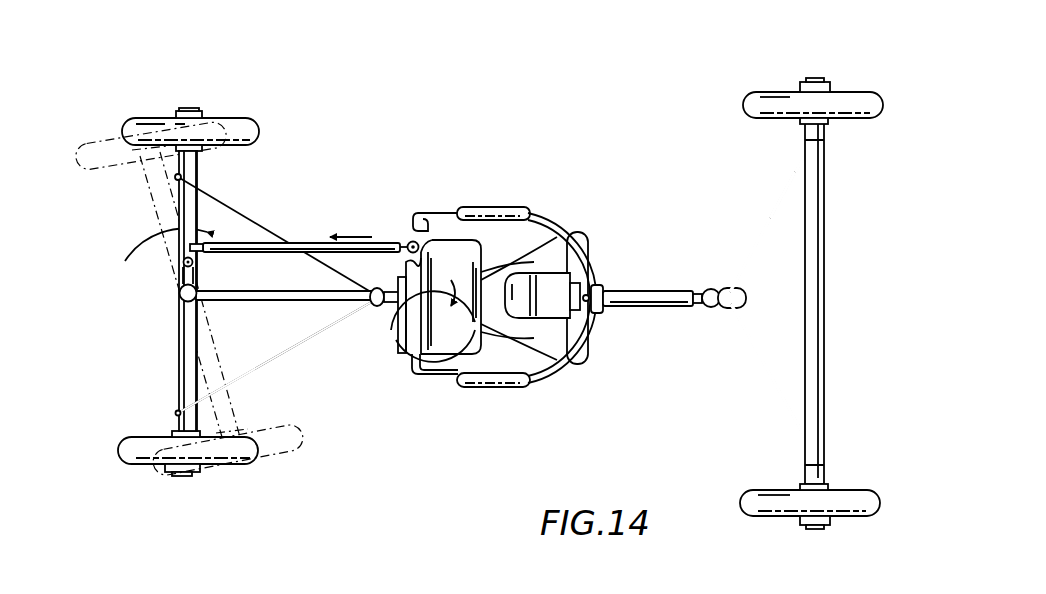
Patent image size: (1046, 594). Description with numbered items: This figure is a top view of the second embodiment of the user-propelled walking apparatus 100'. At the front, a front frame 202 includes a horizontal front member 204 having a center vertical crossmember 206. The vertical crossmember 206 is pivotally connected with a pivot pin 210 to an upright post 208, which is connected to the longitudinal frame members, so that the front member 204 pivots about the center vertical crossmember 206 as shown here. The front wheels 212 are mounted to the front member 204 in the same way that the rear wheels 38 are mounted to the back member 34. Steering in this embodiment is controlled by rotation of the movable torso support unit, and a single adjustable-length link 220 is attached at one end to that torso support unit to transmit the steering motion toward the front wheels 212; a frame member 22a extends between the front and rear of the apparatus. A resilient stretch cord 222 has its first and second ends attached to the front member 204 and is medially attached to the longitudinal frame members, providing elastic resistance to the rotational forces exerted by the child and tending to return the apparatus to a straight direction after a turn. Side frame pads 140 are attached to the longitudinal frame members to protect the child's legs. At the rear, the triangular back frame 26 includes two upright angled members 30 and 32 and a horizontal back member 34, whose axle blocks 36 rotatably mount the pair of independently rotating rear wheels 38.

The user-propelled walking apparatus 100' is at (486, 230).
The side frame pads 140 is at (647, 291).
The back frame 26 is at (750, 247).
The upright angled member 30 is at (752, 365).
The upright angled member 32 is at (774, 201).
The horizontal back member 34 is at (826, 303).
The axle blocks 36 is at (814, 79).
The rear wheels 38 is at (866, 100).
The front frame 202 is at (180, 358).
The horizontal front member 204 is at (178, 387).
The center vertical crossmember 206 is at (182, 299).
The upright post 208 is at (199, 290).
The pivot pin 210 is at (179, 291).
The front wheels 212 is at (246, 127).
The adjustable-length link 220 is at (309, 242).
The resilient stretch cord 222 is at (236, 205).
The frame member 22a is at (269, 301).